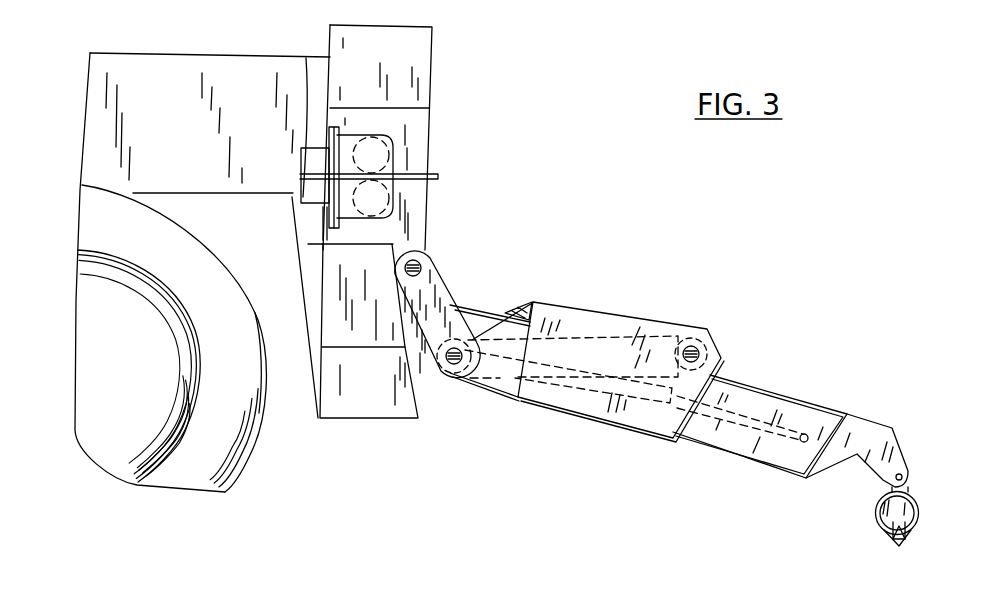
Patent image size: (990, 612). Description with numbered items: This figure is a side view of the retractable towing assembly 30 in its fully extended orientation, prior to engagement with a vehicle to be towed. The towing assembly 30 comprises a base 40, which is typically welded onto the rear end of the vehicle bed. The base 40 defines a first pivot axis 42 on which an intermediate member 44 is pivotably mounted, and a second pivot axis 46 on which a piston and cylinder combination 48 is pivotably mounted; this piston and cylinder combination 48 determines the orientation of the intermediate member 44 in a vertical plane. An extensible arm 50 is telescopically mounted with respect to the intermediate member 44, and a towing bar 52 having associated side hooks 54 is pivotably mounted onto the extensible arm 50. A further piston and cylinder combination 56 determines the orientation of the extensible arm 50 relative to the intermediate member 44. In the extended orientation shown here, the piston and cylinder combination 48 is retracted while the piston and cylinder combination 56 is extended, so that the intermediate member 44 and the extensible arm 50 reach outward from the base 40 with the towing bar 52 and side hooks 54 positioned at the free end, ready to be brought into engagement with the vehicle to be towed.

The retractable towing assembly 30 is at (718, 290).
The base 40 is at (448, 366).
The first pivot axis 42 is at (421, 264).
The intermediate member 44 is at (573, 322).
The second pivot axis 46 is at (463, 351).
The piston and cylinder combination 48 is at (572, 350).
The extensible arm 50 is at (810, 418).
The towing bar 52 is at (903, 503).
The side hooks 54 is at (898, 546).
The piston and cylinder combination 56 is at (652, 398).